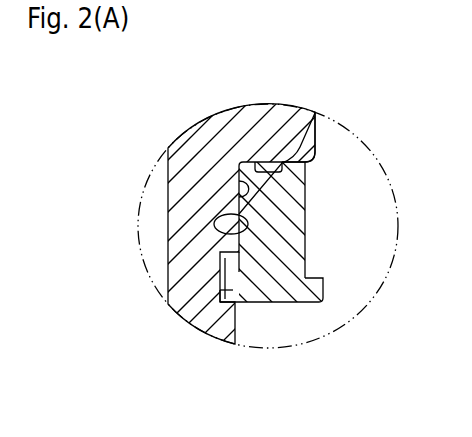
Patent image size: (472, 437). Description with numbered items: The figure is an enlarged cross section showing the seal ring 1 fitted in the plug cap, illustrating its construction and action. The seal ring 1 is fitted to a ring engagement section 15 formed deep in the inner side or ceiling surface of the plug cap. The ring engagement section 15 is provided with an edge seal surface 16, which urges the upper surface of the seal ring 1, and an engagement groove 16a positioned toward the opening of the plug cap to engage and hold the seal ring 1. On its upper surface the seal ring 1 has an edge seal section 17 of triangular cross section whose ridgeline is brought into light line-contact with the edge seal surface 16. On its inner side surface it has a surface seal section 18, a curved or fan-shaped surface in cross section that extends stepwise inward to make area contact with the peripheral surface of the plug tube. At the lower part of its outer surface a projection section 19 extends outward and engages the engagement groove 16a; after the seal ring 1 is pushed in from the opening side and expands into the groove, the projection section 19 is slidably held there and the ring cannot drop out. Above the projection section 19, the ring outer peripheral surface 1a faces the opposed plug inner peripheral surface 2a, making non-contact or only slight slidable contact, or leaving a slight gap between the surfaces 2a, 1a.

The seal ring 1 is at (305, 250).
The ring outer peripheral surface 1a is at (238, 237).
The plug inner peripheral surface 2a is at (238, 181).
The ring engagement section 15 is at (239, 172).
The edge seal surface 16 is at (315, 112).
The engagement groove 16a is at (228, 262).
The edge seal section 17 is at (282, 170).
The surface seal section 18 is at (321, 299).
The projection section 19 is at (220, 294).